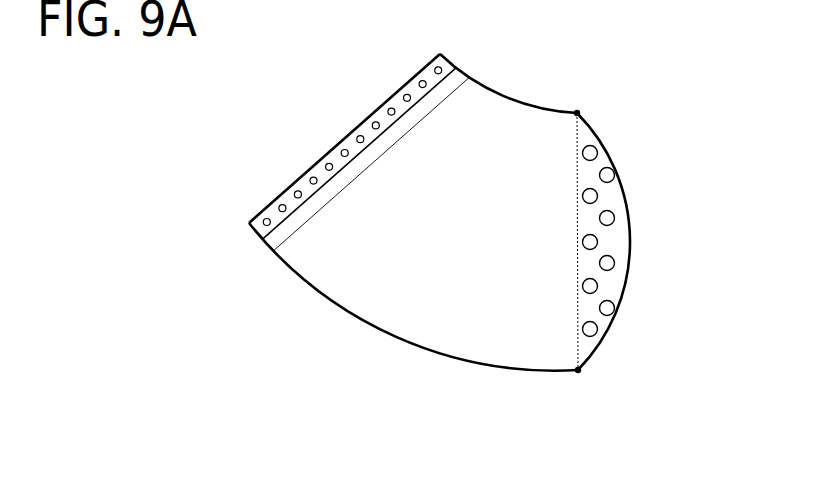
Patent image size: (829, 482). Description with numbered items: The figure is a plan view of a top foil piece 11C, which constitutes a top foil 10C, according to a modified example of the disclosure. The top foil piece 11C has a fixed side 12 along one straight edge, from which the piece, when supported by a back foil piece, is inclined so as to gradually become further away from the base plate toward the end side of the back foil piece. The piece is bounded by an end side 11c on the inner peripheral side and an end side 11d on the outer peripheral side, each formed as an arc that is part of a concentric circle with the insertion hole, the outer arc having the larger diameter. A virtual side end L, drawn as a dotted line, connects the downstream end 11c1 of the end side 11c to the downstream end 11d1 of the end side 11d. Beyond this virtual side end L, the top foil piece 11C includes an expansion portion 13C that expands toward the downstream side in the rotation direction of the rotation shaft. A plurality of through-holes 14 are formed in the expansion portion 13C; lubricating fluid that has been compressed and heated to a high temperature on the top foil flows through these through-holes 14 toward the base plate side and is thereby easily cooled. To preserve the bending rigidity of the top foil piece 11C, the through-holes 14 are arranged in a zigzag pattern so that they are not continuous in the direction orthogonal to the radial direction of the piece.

The top foil 10C is at (489, 223).
The top foil piece 11C is at (345, 252).
The end side on the inner peripheral side 11c is at (487, 88).
The end side on the outer peripheral side 11d is at (385, 327).
The downstream end of the end side on the inner peripheral side 11c1 is at (577, 113).
The downstream end of the end side on the outer peripheral side 11d1 is at (578, 370).
The fixed side 12 is at (345, 138).
The expansion portion 13C is at (627, 192).
The through-holes 14 is at (585, 247).
The virtual side end L is at (577, 137).